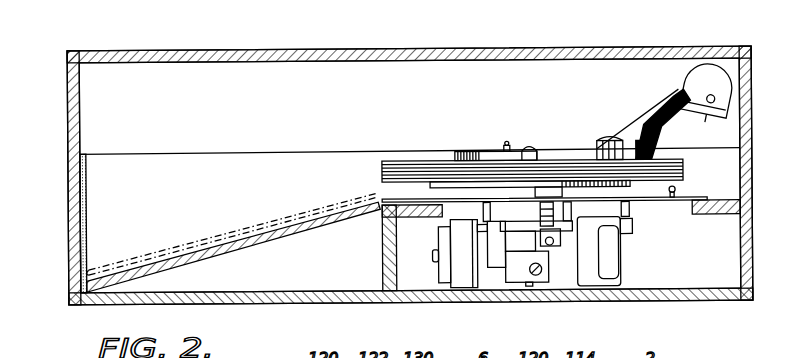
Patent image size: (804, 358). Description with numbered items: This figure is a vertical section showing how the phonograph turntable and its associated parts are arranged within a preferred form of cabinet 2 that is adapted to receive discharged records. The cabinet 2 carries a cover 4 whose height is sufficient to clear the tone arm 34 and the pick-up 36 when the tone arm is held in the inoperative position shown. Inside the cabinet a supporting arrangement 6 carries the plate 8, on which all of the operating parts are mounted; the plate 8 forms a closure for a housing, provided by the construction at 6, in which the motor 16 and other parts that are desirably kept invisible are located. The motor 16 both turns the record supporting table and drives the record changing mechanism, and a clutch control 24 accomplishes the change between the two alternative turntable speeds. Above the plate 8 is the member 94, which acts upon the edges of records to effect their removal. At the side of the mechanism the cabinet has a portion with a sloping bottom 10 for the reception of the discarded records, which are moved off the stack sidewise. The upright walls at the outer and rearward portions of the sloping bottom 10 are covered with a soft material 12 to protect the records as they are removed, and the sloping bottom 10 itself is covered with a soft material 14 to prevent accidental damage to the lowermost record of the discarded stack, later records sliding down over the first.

The cabinet 2 is at (68, 229).
The cover 4 is at (452, 50).
The supporting arrangement 6 is at (704, 216).
The plate 8 is at (432, 181).
The sloping bottom 10 is at (266, 247).
The soft material 12 is at (86, 178).
The soft material 14 is at (223, 242).
The motor 16 is at (513, 268).
The clutch control 24 is at (555, 240).
The tone arm 34 is at (638, 123).
The pick-up 36 is at (711, 72).
The member 94 is at (463, 152).